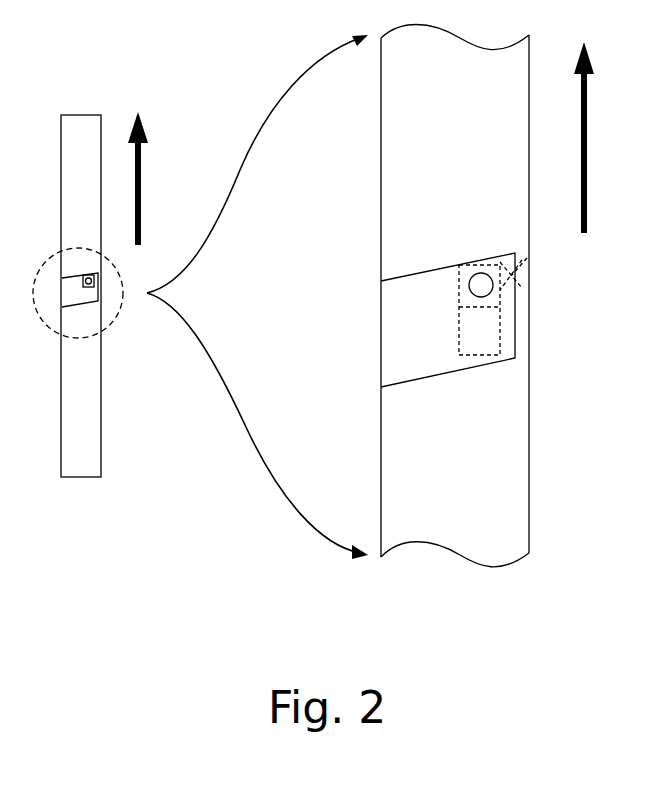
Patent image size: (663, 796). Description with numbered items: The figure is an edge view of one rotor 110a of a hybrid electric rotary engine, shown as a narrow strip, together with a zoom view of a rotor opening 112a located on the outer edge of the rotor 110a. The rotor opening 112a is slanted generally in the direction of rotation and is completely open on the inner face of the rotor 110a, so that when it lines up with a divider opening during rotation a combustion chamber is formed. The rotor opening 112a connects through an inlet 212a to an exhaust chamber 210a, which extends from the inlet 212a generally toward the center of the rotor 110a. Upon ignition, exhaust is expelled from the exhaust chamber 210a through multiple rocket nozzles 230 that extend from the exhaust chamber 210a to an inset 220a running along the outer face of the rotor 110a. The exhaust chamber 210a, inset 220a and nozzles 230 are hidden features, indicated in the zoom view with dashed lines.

The rotor 110a is at (92, 62).
The rotor opening 112a is at (400, 384).
The exhaust chamber 210a is at (459, 300).
The inlet 212a is at (469, 285).
The inset 220a is at (503, 290).
The rocket nozzles 230 is at (516, 284).